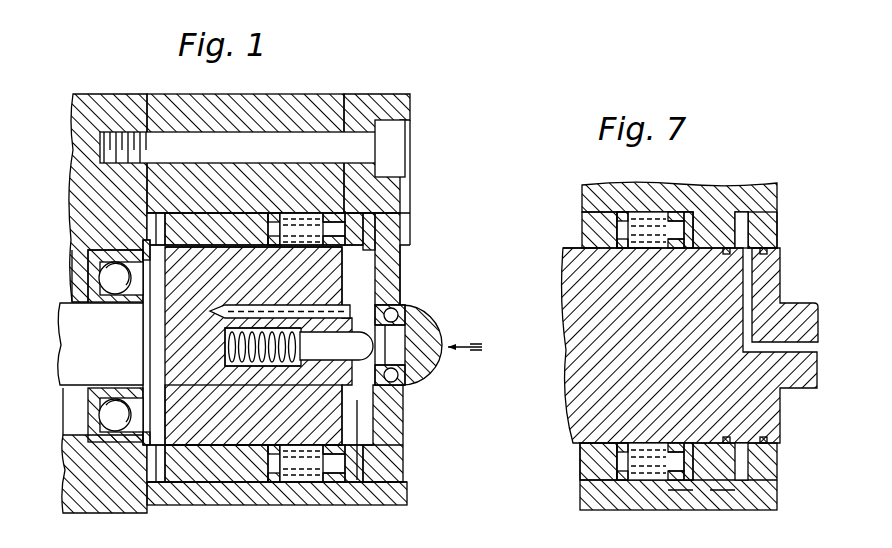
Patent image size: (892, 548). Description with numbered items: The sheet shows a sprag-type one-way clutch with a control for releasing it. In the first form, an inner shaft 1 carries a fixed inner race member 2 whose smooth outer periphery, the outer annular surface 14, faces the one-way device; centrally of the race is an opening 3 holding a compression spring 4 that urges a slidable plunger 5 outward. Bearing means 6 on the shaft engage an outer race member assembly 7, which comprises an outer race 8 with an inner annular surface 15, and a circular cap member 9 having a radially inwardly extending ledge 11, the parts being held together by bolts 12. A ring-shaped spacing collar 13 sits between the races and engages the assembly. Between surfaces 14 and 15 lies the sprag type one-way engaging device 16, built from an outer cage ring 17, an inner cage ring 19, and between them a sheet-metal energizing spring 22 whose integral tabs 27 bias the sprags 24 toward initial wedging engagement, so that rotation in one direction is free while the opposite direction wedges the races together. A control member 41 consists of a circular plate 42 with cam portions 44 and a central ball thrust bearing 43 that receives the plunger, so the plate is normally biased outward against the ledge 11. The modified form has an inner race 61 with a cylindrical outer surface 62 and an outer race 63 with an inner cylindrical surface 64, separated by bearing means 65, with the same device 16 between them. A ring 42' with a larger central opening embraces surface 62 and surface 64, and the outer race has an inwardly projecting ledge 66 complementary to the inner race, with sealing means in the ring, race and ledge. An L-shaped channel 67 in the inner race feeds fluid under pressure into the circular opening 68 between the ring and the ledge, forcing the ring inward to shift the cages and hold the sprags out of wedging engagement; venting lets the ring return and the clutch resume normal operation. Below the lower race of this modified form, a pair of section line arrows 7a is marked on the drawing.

In FIG. 1, the inner shaft 1 is at (78, 335).
In FIG. 1, the inner race member 2 is at (203, 277).
In FIG. 1, the opening 3 is at (224, 341).
In FIG. 1, the compression spring 4 is at (256, 410).
In FIG. 1, the plunger 5 is at (309, 331).
In FIG. 1, the bearing means 6 is at (116, 294).
In FIG. 1, the outer race member assembly 7 is at (103, 91).
In FIG. 1, the outer race 8 is at (216, 93).
In FIG. 1, the circular cap member 9 is at (405, 93).
In FIG. 1, the ledge 11 is at (408, 477).
In FIG. 1, the bolts 12 is at (400, 140).
In FIG. 1, the spacing collar 13 is at (163, 226).
In FIG. 1, the outer annular surface of inner race 14 is at (285, 452).
In FIG. 1, the inner annular surface of outer race 15 is at (301, 481).
In FIG. 1, the sprag type one-way engaging device 16 is at (305, 211).
In FIG. 7, the sprag type one-way engaging device 16 is at (644, 441).
In FIG. 1, the outer cage ring 17 is at (275, 212).
In FIG. 7, the outer cage ring 17 is at (620, 211).
In FIG. 1, the inner cage ring 19 is at (310, 246).
In FIG. 7, the inner cage ring 19 is at (618, 250).
In FIG. 1, the sprags 24 is at (283, 481).
In FIG. 1, the control member 41 is at (405, 406).
In FIG. 1, the circular plate 42 is at (423, 259).
In FIG. 1, the ball thrust bearing 43 is at (470, 317).
In FIG. 1, the cam portions 44 is at (369, 253).
In FIG. 7, the section line 7a is at (677, 494).
In FIG. 7, the energizing spring 22 is at (624, 458).
In FIG. 7, the energizing tabs 27 is at (656, 250).
In FIG. 7, the ring 42' is at (700, 476).
In FIG. 7, the inner race 61 is at (576, 318).
In FIG. 7, the cylindrical outer surface 62 is at (578, 249).
In FIG. 7, the outer race 63 is at (597, 195).
In FIG. 7, the inner cylindrical surface 64 is at (646, 219).
In FIG. 7, the bearing means 65 is at (590, 218).
In FIG. 7, the ledge 66 is at (762, 230).
In FIG. 7, the L-shaped channel 67 is at (806, 352).
In FIG. 7, the opening 68 is at (747, 242).